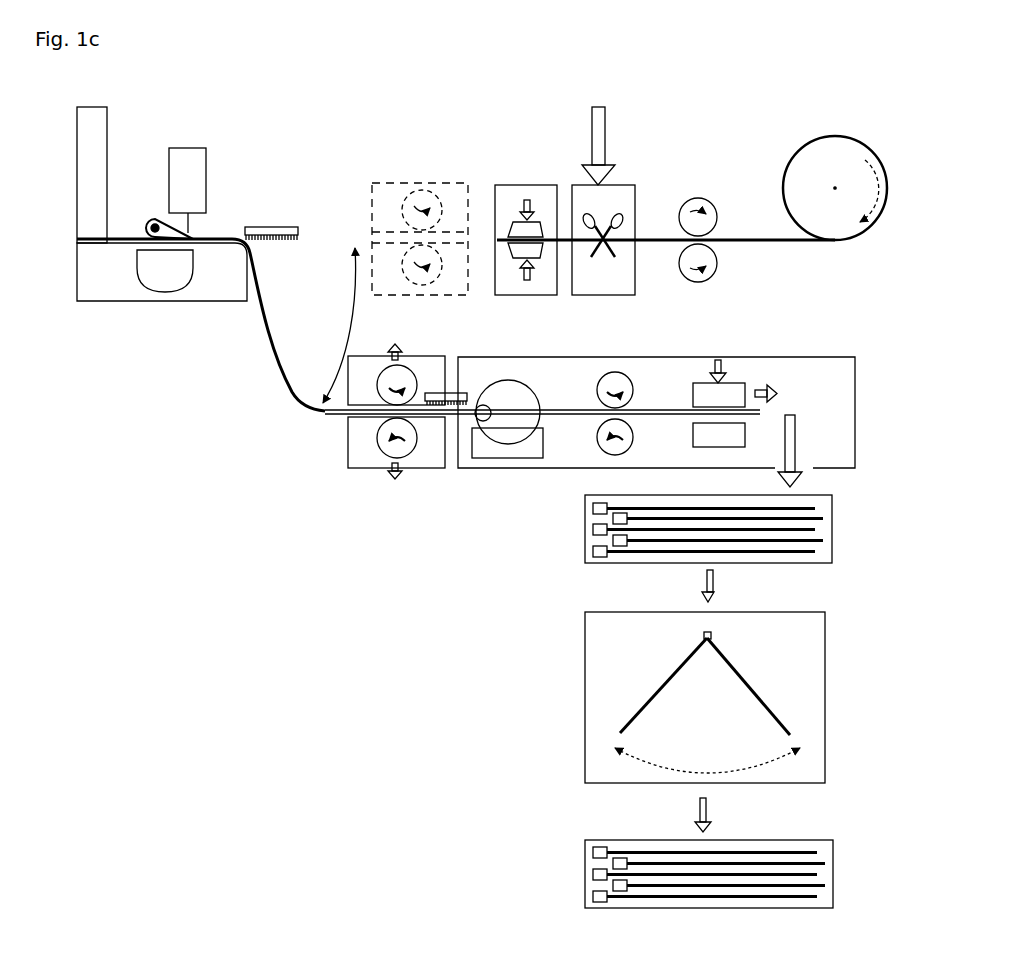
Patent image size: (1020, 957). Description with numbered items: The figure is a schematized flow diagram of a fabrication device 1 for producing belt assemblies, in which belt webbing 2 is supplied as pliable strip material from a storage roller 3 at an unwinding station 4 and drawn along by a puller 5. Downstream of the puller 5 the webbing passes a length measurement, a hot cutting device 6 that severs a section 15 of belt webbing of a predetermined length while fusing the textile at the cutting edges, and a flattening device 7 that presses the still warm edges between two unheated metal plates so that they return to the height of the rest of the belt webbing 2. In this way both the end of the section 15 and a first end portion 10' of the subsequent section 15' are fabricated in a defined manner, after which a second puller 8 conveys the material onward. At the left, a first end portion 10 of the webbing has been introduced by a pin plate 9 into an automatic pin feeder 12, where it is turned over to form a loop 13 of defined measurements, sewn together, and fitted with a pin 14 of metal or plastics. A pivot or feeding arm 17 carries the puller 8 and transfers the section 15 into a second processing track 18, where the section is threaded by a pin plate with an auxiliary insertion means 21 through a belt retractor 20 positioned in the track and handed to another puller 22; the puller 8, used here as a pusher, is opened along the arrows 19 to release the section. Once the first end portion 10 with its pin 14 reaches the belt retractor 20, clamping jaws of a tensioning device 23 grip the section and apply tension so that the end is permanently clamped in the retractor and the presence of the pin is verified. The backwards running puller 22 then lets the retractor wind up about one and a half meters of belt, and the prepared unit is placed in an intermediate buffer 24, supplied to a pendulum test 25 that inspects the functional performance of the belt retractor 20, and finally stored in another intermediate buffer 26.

The device 1 is at (853, 93).
The belt webbing 2 is at (805, 243).
The storage roller 3 is at (847, 140).
The unwinding station 4 is at (758, 157).
The puller 5 is at (705, 198).
The hot cutting device 6 is at (610, 185).
The flattening device 7 is at (525, 185).
The second puller 8 is at (420, 184).
The pin plate 9 is at (277, 227).
The first end portion 10 is at (235, 164).
The first end portion of subsequent section 10' is at (470, 294).
The automatic pin feeder 12 is at (117, 260).
The loop 13 is at (145, 222).
The pin 14 is at (143, 232).
The section of belt webbing 15 is at (262, 484).
The subsequent section of belt webbing 15' is at (677, 291).
The pivot or feeding arm 17 is at (334, 325).
The second processing track 18 is at (820, 372).
The arrows 19 is at (393, 478).
The belt retractor 20 is at (495, 452).
The auxiliary insertion means 21 is at (444, 405).
The puller 22 is at (595, 445).
The tensioning device 23 is at (750, 408).
The intermediate buffer 24 is at (825, 530).
The pendulum test 25 is at (820, 670).
The intermediate buffer 26 is at (825, 875).